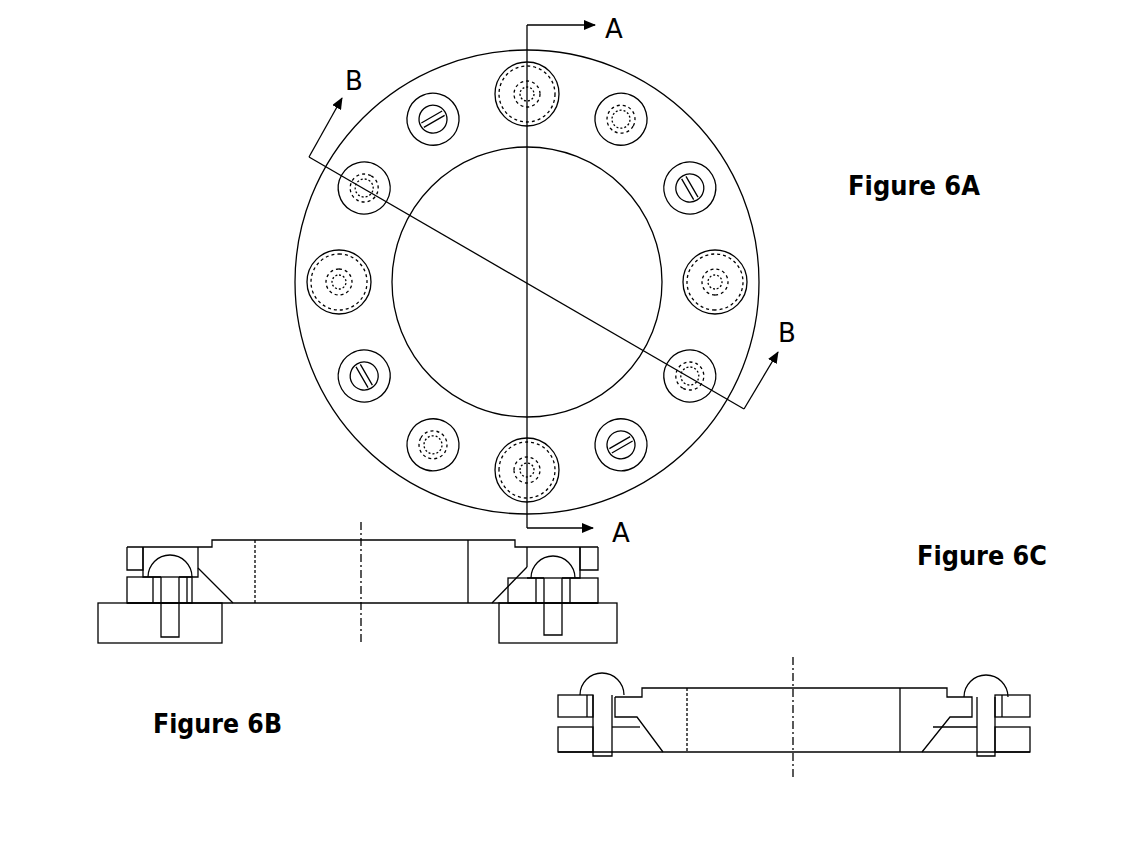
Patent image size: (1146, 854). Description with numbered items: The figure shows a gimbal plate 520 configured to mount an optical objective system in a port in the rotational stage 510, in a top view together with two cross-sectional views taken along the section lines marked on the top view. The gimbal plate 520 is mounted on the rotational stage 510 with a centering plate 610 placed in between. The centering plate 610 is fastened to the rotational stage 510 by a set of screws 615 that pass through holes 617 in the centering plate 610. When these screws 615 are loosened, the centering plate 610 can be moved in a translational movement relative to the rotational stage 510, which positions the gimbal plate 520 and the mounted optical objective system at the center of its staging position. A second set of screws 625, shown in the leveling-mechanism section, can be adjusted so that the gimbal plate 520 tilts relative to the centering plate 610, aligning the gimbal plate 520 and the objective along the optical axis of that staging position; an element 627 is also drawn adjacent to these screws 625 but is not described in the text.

In FIG. 6B, the rotational stage 510 is at (617, 628).
In FIG. 6A, the gimbal plate 520 is at (713, 145).
In FIG. 6B, the gimbal plate 520 is at (243, 540).
In FIG. 6C, the gimbal plate 520 is at (918, 688).
In FIG. 6B, the centering plate 610 is at (598, 593).
In FIG. 6C, the centering plate 610 is at (1030, 740).
In FIG. 6B, the screws 615 is at (167, 557).
In FIG. 6B, the holes 617 is at (158, 590).
In FIG. 6C, the screws 625 is at (603, 740).
In FIG. 6C, the upper washer 627 is at (1000, 708).